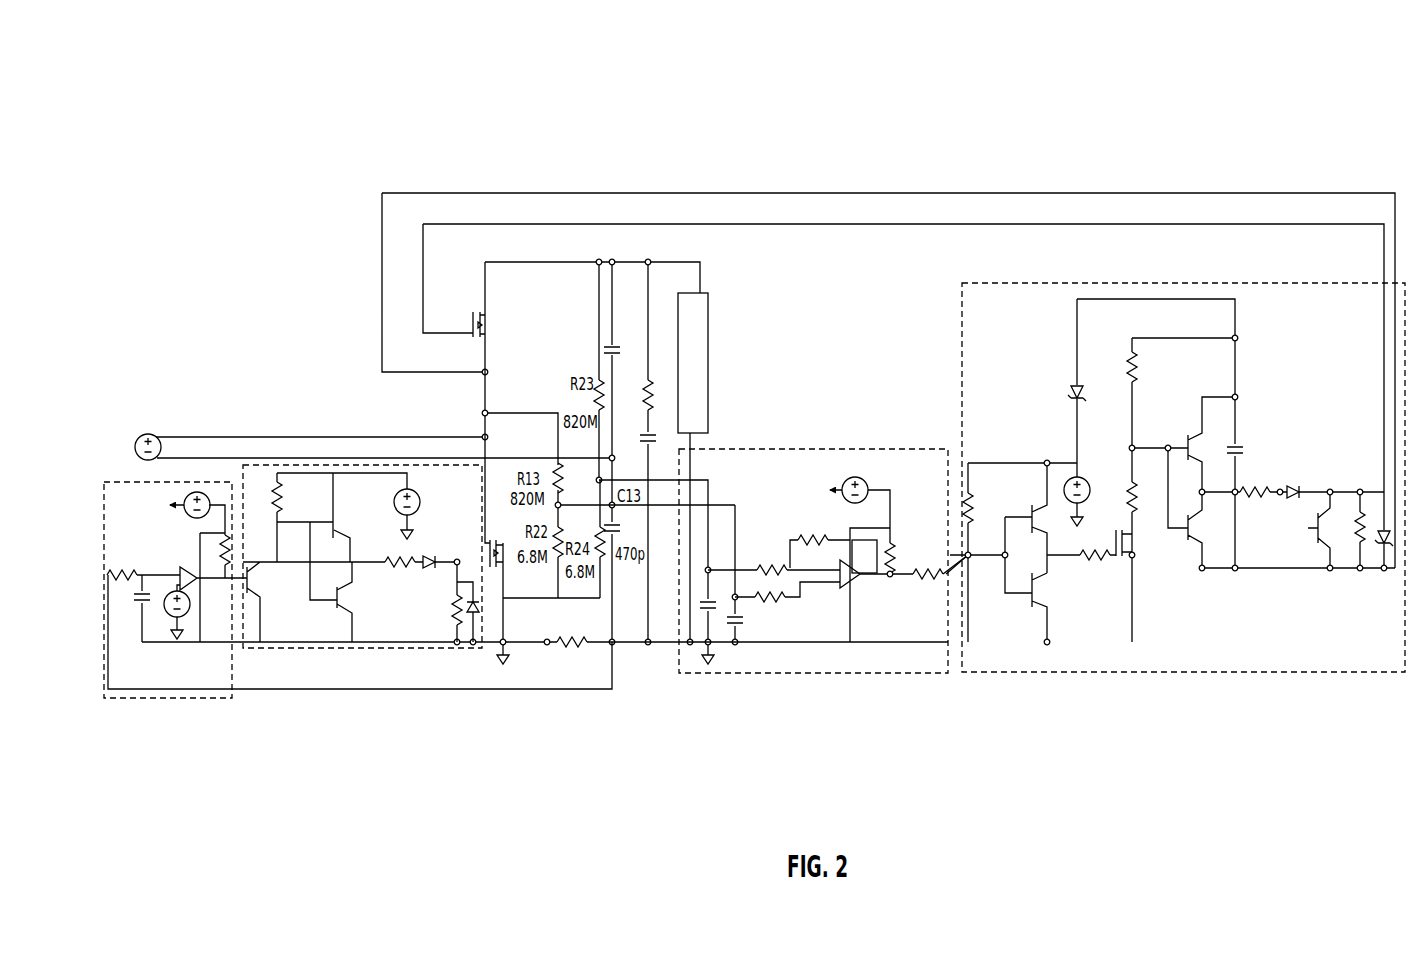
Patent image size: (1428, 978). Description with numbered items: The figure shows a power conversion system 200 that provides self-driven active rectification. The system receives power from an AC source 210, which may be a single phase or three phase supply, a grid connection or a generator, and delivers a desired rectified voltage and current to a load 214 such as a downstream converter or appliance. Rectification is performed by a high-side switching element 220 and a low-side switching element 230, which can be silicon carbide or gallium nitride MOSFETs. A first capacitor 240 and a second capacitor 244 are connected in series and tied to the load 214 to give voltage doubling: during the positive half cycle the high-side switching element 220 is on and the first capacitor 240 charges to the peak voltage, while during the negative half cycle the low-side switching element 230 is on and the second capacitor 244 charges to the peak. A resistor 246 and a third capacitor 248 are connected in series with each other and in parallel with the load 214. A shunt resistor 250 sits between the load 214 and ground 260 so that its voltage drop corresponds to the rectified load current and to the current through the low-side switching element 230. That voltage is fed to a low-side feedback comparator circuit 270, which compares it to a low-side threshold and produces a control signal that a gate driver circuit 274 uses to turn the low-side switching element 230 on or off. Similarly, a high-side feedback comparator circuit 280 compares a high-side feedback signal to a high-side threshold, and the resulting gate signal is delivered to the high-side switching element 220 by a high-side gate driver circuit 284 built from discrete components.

The power conversion system 200 is at (1253, 157).
The AC source 210 is at (149, 428).
The load 214 is at (693, 288).
The high-side switching element 220 is at (456, 325).
The low-side switching element 230 is at (491, 526).
The first capacitor 240 is at (594, 350).
The second capacitor 244 is at (667, 450).
The resistor 246 is at (663, 393).
The third capacitor 248 is at (682, 443).
The shunt resistor 250 is at (590, 657).
The ground 260 is at (507, 676).
The low-side feedback comparator circuit 270 is at (117, 702).
The gate driver circuit 274 is at (307, 660).
The high-side feedback comparator circuit 280 is at (802, 677).
The high-side gate driver circuit 284 is at (1160, 675).